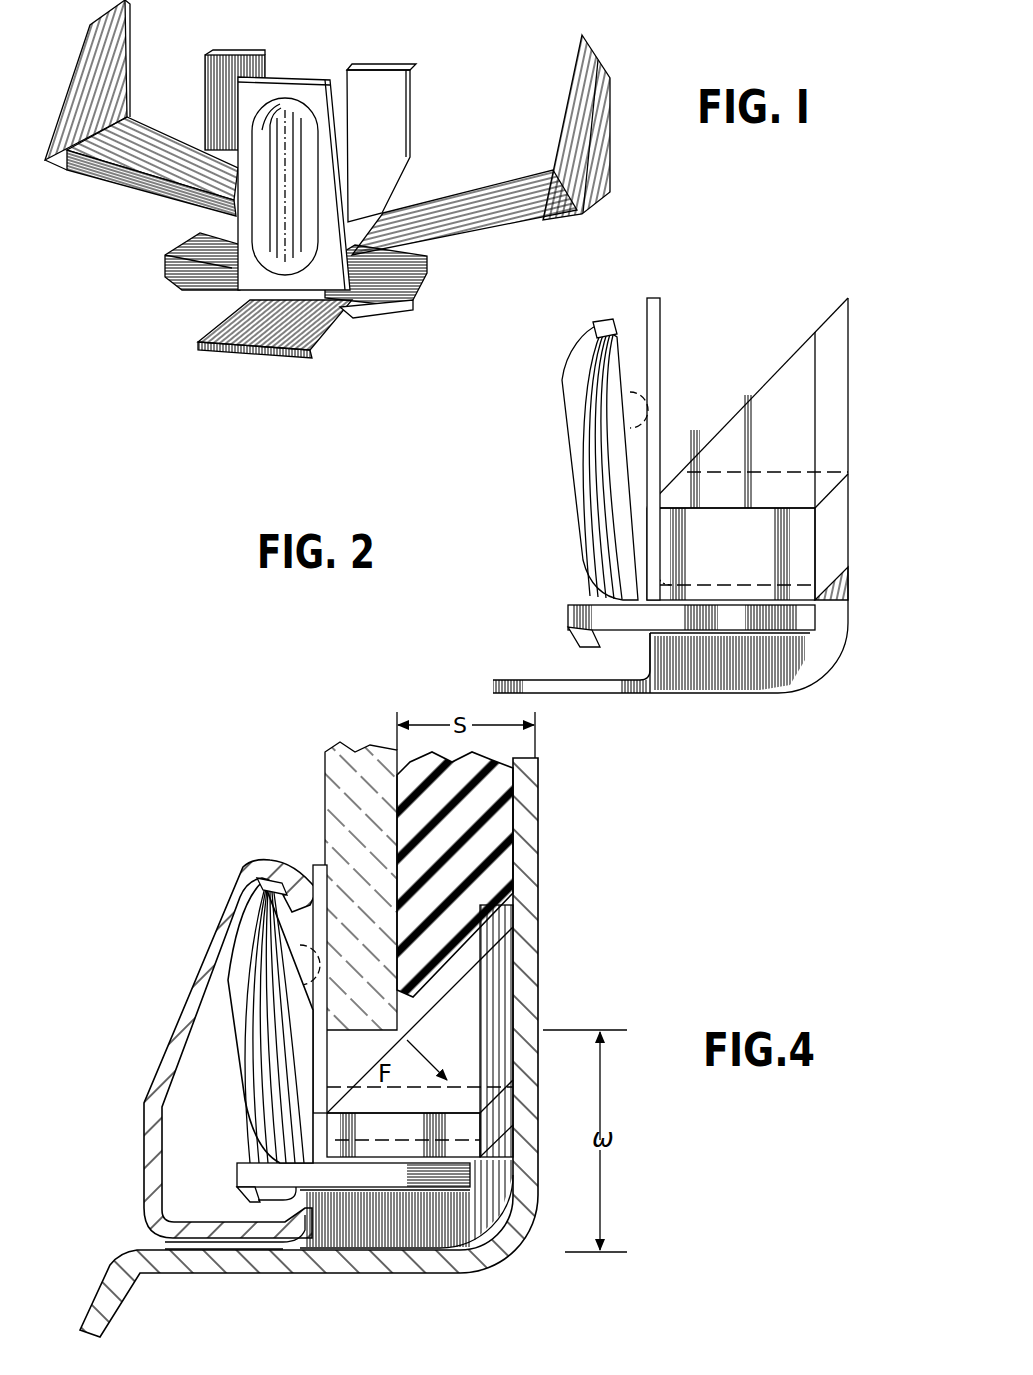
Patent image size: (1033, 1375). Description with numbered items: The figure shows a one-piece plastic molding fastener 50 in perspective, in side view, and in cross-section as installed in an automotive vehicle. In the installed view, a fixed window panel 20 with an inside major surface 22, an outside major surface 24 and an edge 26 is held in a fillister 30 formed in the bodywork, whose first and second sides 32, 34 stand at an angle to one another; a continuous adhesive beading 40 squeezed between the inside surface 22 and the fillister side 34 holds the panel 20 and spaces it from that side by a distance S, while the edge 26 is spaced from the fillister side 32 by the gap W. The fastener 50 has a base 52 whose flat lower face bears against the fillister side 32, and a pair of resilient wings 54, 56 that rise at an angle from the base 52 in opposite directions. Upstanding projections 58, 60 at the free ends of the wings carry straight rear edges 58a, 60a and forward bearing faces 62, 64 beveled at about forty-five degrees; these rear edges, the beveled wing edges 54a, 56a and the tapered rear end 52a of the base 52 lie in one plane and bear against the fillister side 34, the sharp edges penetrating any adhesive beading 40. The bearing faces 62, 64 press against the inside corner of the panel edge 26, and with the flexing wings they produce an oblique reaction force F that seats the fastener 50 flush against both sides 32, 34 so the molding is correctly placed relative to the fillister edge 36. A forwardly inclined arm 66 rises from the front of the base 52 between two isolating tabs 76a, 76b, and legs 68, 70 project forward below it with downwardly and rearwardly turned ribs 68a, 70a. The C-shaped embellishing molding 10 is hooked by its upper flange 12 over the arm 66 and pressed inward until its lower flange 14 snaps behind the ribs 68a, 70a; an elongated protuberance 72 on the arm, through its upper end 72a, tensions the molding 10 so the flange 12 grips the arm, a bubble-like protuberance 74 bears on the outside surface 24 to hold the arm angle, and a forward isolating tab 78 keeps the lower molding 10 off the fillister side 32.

In FIG. 4, the embellishing molding 10 is at (137, 1097).
In FIG. 4, the upper molding flange 12 is at (287, 867).
In FIG. 4, the lower molding flange 14 is at (287, 1230).
In FIG. 4, the window panel 20 is at (333, 740).
In FIG. 4, the inside major surface 22 is at (405, 753).
In FIG. 4, the outside major surface 24 is at (327, 792).
In FIG. 4, the edge 26 is at (370, 1040).
In FIG. 4, the fillister 30 is at (497, 1257).
In FIG. 4, the first side 32 is at (350, 1267).
In FIG. 4, the second side 34 is at (527, 933).
In FIG. 4, the edge 36 is at (137, 1282).
In FIG. 4, the adhesive beading 40 is at (477, 853).
In FIG. 1, the molding fastener 50 is at (100, 295).
In FIG. 2, the molding fastener 50 is at (537, 507).
In FIG. 4, the molding fastener 50 is at (515, 983).
In FIG. 1, the base 52 is at (312, 348).
In FIG. 2, the base 52 is at (747, 680).
In FIG. 4, the base 52 is at (413, 1237).
In FIG. 2, the rear end 52a is at (820, 652).
In FIG. 4, the rear end 52a is at (595, 1171).
In FIG. 1, the wing 54 is at (117, 180).
In FIG. 1, the rear edge 54a is at (190, 118).
In FIG. 1, the wing 56 is at (487, 237).
In FIG. 2, the wing 56 is at (778, 575).
In FIG. 4, the wing 56 is at (403, 1135).
In FIG. 1, the rear edge 56a is at (508, 153).
In FIG. 2, the rear edge 56a is at (908, 536).
In FIG. 1, the upstanding projection 58 is at (107, 100).
In FIG. 1, the rear edge 58a is at (195, 27).
In FIG. 1, the upstanding projection 60 is at (600, 153).
In FIG. 2, the upstanding projection 60 is at (785, 453).
In FIG. 4, the upstanding projection 60 is at (543, 997).
In FIG. 2, the rear edge 60a is at (905, 361).
In FIG. 4, the rear edge 60a is at (543, 1028).
In FIG. 1, the bearing face 62 is at (87, 88).
In FIG. 1, the bearing face 64 is at (582, 97).
In FIG. 2, the bearing face 64 is at (770, 378).
In FIG. 4, the bearing face 64 is at (408, 1012).
In FIG. 1, the arm 66 is at (333, 90).
In FIG. 2, the arm 66 is at (605, 338).
In FIG. 4, the arm 66 is at (310, 1080).
In FIG. 1, the leg 68 is at (193, 250).
In FIG. 1, the rib 68a is at (177, 288).
In FIG. 1, the leg 70 is at (428, 285).
In FIG. 2, the leg 70 is at (668, 623).
In FIG. 4, the leg 70 is at (378, 1177).
In FIG. 1, the rib 70a is at (383, 310).
In FIG. 2, the rib 70a is at (577, 640).
In FIG. 4, the rib 70a is at (240, 1188).
In FIG. 1, the elongated protuberance 72 is at (268, 292).
In FIG. 2, the elongated protuberance 72 is at (608, 558).
In FIG. 4, the elongated protuberance 72 is at (260, 1050).
In FIG. 1, the upper end 72a is at (262, 110).
In FIG. 2, the upper end 72a is at (560, 357).
In FIG. 4, the upper end 72a is at (233, 922).
In FIG. 2, the bubble-like protuberance 74 is at (643, 410).
In FIG. 4, the bubble-like protuberance 74 is at (310, 948).
In FIG. 1, the isolating tab 76a is at (283, 24).
In FIG. 1, the isolating tab 76b is at (377, 117).
In FIG. 2, the isolating tab 76b is at (722, 300).
In FIG. 4, the isolating tab 76b is at (320, 865).
In FIG. 1, the isolating tab 78 is at (267, 333).
In FIG. 2, the isolating tab 78 is at (495, 680).
In FIG. 4, the isolating tab 78 is at (210, 1245).